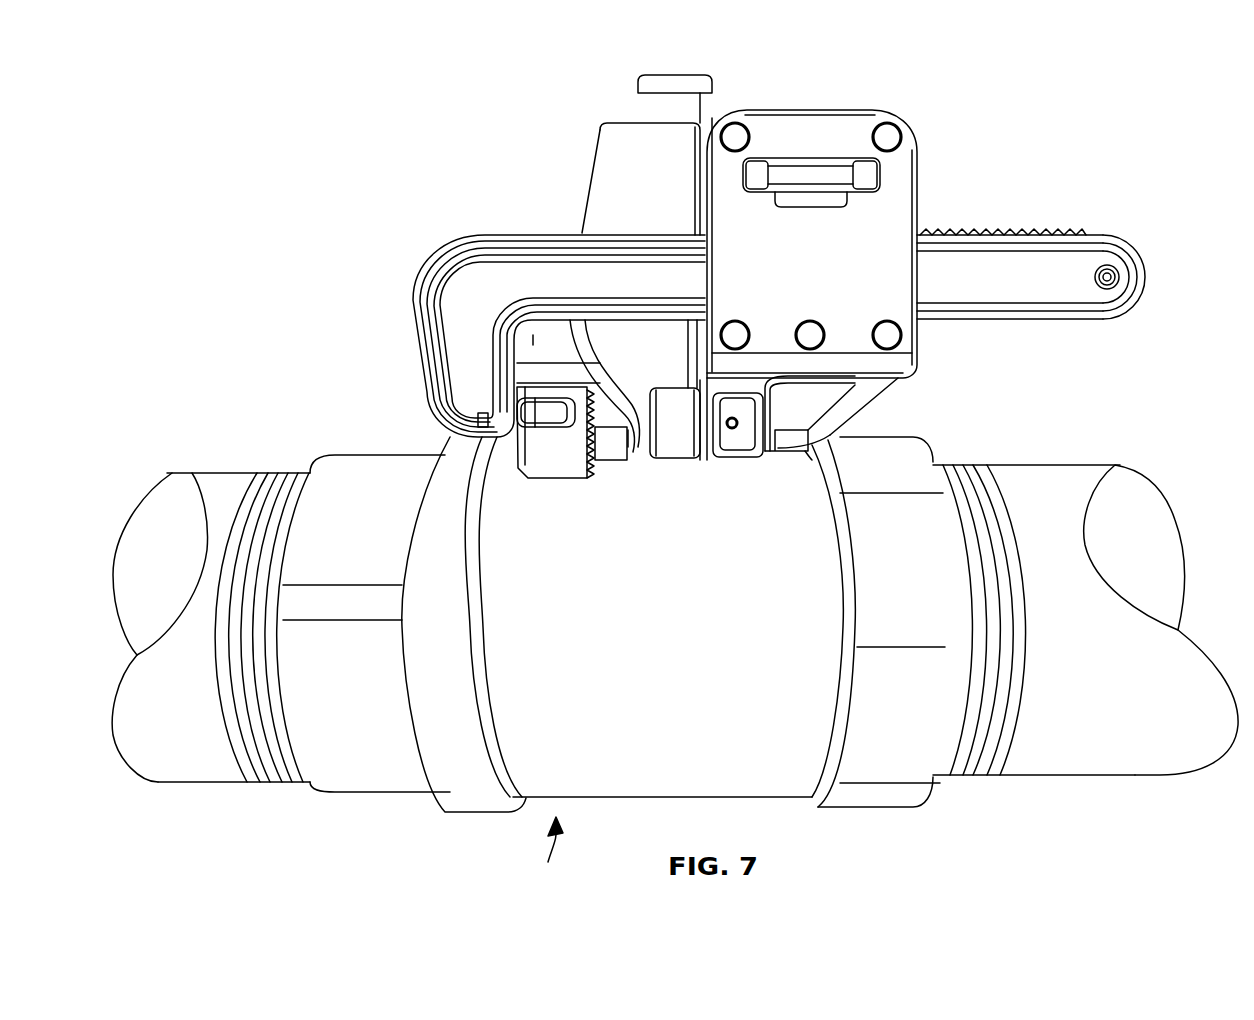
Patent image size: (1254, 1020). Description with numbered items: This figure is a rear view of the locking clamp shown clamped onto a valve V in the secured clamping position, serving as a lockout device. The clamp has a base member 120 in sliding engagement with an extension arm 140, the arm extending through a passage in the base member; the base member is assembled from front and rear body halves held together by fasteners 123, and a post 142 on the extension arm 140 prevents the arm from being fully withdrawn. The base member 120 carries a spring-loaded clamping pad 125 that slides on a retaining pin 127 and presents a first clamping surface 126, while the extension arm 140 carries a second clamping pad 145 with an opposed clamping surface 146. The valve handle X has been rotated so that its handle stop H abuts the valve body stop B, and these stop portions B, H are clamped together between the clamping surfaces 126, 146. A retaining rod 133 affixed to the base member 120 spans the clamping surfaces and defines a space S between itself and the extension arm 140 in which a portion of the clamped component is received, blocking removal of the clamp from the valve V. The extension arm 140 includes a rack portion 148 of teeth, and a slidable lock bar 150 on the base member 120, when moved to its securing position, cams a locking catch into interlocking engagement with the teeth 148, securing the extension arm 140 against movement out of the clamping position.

The base member 120 is at (908, 120).
The fasteners 123 is at (737, 133).
The clamping pad 125 is at (677, 440).
The clamping surface 126 is at (647, 455).
The retaining pin 127 is at (737, 423).
The retaining rod 133 is at (535, 373).
The extension arm 140 is at (548, 268).
The post 142 is at (1110, 276).
The clamping pad 145 is at (548, 455).
The clamping surface 146 is at (550, 424).
The rack portion 148 is at (978, 228).
The lock bar 150 is at (862, 178).
The valve handle X is at (641, 110).
The space S is at (542, 345).
The valve body stop B is at (610, 450).
The valve handle stop H is at (628, 445).
The valve V is at (552, 862).